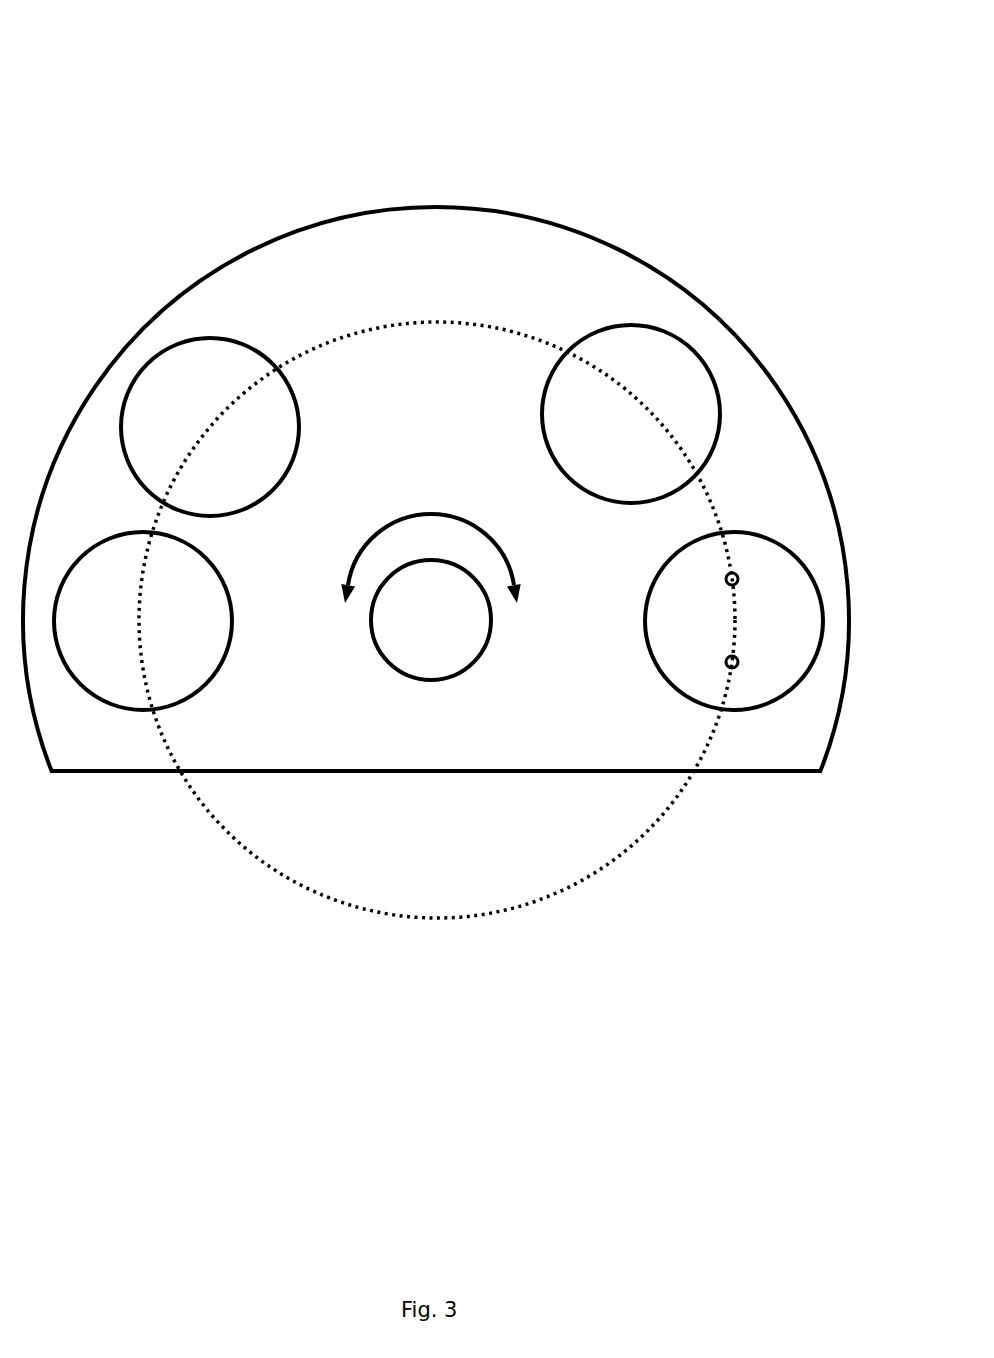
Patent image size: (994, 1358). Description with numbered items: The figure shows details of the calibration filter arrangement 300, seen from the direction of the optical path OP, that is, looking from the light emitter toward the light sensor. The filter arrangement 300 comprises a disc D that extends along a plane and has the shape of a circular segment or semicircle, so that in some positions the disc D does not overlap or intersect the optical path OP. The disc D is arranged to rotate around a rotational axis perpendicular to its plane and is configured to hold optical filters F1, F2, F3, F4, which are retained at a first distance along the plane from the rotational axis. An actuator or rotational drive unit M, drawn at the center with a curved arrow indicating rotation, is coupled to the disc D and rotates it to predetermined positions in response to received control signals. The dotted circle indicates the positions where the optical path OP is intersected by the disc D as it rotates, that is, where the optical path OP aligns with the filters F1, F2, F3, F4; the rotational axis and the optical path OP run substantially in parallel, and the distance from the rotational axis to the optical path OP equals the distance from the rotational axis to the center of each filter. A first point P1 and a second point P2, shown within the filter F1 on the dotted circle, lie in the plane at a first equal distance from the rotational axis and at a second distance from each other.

The calibration filter arrangement 300 is at (592, 108).
The disc D is at (358, 222).
The optical path OP is at (293, 348).
The optical filter F1 is at (734, 621).
The optical filter F2 is at (631, 414).
The optical filter F3 is at (210, 427).
The optical filter F4 is at (143, 621).
The rotational drive unit M is at (430, 597).
The first point P1 is at (715, 580).
The second point P2 is at (715, 663).